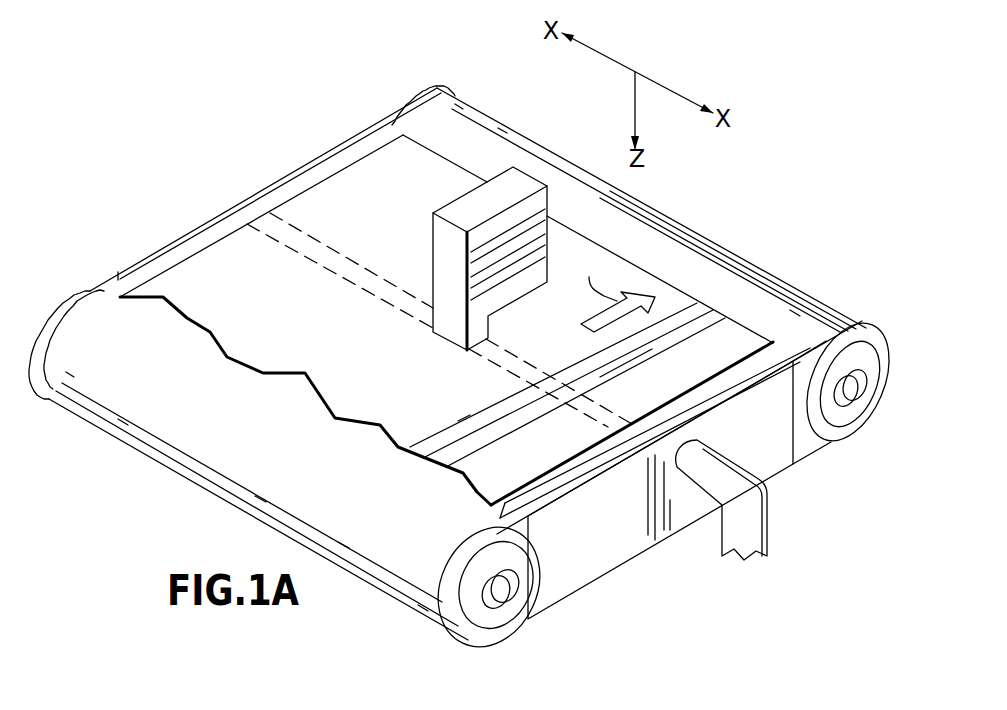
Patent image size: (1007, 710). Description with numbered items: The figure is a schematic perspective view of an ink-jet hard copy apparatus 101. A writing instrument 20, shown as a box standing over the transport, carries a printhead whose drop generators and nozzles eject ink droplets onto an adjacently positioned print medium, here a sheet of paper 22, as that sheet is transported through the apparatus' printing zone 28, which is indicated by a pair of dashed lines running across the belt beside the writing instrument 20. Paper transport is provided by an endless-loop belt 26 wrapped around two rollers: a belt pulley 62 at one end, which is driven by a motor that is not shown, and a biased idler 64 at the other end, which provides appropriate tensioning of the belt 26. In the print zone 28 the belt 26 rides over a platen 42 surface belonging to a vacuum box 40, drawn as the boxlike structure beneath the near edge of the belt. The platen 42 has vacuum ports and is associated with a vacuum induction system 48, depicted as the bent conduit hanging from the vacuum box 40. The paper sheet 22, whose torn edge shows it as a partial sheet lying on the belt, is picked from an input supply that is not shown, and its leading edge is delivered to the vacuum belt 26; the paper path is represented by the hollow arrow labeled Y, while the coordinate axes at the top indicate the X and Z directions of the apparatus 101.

The ink-jet hard copy apparatus 101 is at (240, 140).
The writing instrument 20 is at (528, 172).
The sheet of paper 22 is at (410, 439).
The endless-loop belt 26 is at (714, 246).
The printing zone 28 is at (273, 283).
The vacuum box 40 is at (582, 565).
The platen 42 is at (568, 498).
The vacuum induction system 48 is at (768, 527).
The belt pulley 62 is at (863, 330).
The biased idler 64 is at (502, 631).